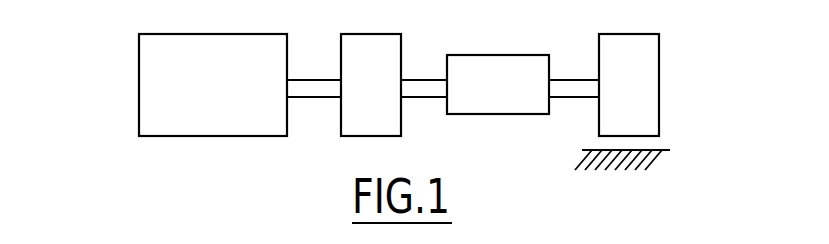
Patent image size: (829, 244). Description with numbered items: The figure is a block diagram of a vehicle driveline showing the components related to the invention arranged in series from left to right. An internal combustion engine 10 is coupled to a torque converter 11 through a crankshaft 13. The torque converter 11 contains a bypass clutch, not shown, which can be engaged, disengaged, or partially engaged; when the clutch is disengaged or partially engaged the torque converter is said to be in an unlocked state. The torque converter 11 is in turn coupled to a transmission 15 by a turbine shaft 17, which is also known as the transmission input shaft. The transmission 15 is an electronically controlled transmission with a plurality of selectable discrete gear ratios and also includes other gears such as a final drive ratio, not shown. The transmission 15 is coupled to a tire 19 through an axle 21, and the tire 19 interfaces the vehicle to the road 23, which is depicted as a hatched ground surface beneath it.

The internal combustion engine 10 is at (139, 79).
The torque converter 11 is at (352, 33).
The crankshaft 13 is at (316, 98).
The transmission 15 is at (490, 55).
The turbine shaft 17 is at (422, 78).
The tire 19 is at (659, 71).
The axle 21 is at (568, 78).
The road 23 is at (655, 152).